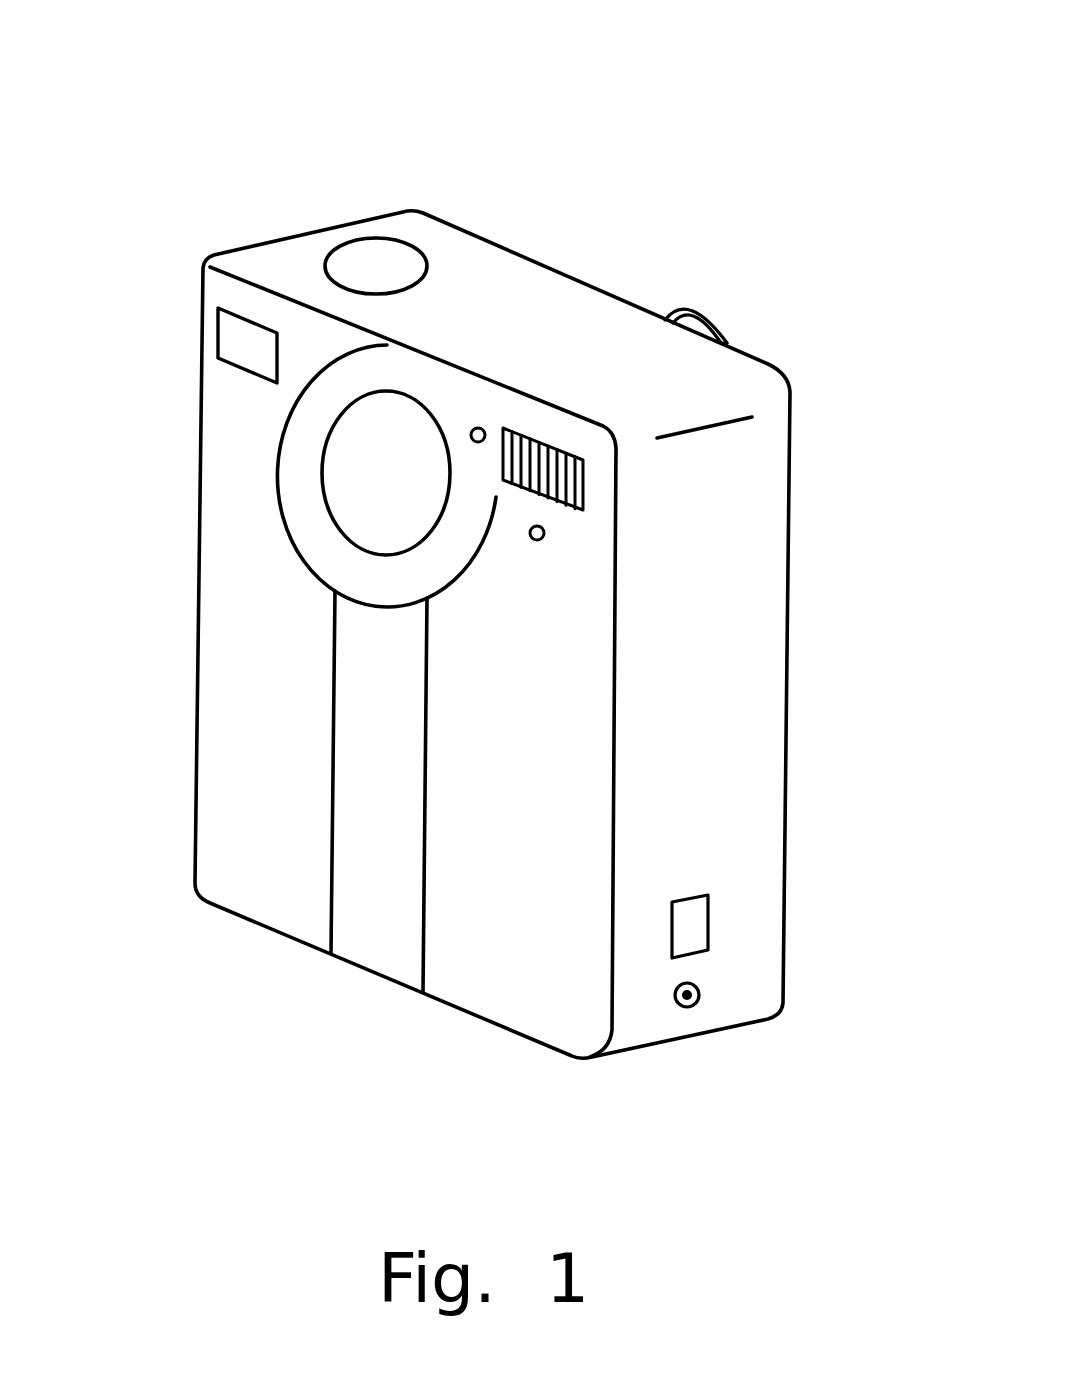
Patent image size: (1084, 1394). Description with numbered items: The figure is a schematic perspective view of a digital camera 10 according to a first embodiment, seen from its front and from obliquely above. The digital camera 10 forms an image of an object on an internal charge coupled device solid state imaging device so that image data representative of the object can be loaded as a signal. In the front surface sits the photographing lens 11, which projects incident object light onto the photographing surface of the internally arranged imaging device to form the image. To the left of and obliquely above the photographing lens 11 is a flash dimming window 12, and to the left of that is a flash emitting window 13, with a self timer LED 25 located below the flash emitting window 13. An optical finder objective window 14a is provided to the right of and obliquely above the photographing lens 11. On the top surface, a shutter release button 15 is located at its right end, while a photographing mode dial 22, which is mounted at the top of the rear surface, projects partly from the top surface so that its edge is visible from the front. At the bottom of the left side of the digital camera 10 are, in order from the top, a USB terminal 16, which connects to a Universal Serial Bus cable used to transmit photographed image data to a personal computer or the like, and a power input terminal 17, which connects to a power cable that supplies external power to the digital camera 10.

The digital camera 10 is at (768, 165).
The photographing lens 11 is at (325, 467).
The flash dimming window 12 is at (483, 428).
The flash emitting window 13 is at (585, 487).
The optical finder objective window 14a is at (233, 338).
The shutter release button 15 is at (375, 263).
The USB terminal 16 is at (693, 927).
The power input terminal 17 is at (700, 995).
The photographing mode dial 22 is at (728, 330).
The self timer LED 25 is at (543, 541).